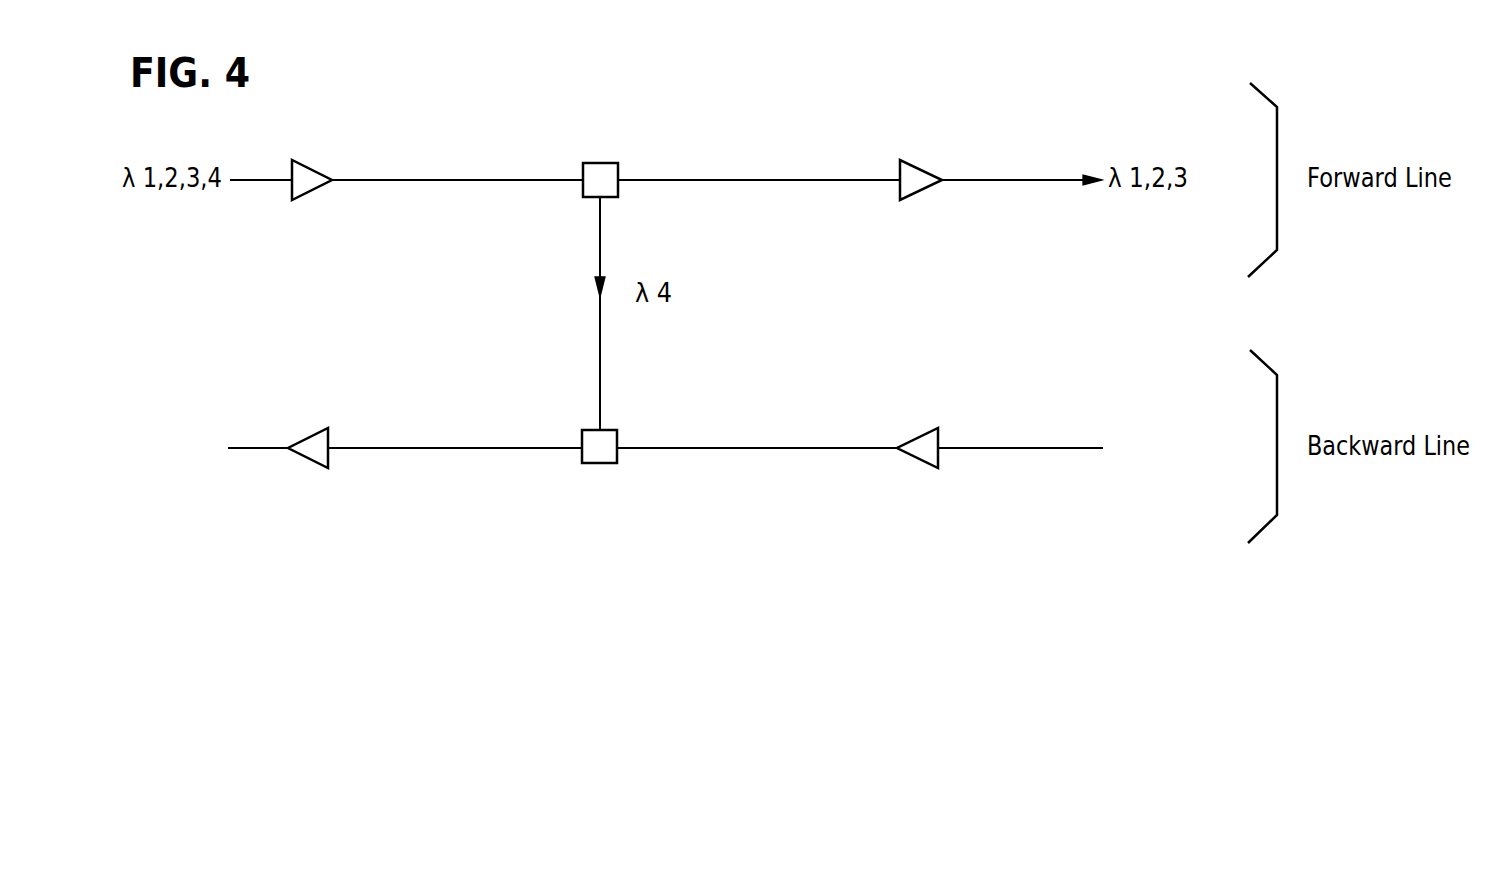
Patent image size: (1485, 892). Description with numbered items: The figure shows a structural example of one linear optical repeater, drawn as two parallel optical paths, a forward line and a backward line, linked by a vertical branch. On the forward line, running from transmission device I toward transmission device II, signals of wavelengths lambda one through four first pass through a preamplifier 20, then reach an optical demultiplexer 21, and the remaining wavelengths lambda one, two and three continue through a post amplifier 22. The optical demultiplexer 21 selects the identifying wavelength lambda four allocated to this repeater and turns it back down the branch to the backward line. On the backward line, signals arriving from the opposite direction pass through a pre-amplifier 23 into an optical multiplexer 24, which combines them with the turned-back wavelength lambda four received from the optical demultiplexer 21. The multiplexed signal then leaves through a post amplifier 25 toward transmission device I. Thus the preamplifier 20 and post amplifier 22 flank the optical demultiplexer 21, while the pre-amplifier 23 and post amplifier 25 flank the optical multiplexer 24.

The preamplifier 20 is at (307, 165).
The optical demultiplexer 21 is at (602, 163).
The post amplifier 22 is at (908, 163).
The pre-amplifier 23 is at (922, 464).
The optical multiplexer 24 is at (593, 464).
The post amplifier 25 is at (320, 464).